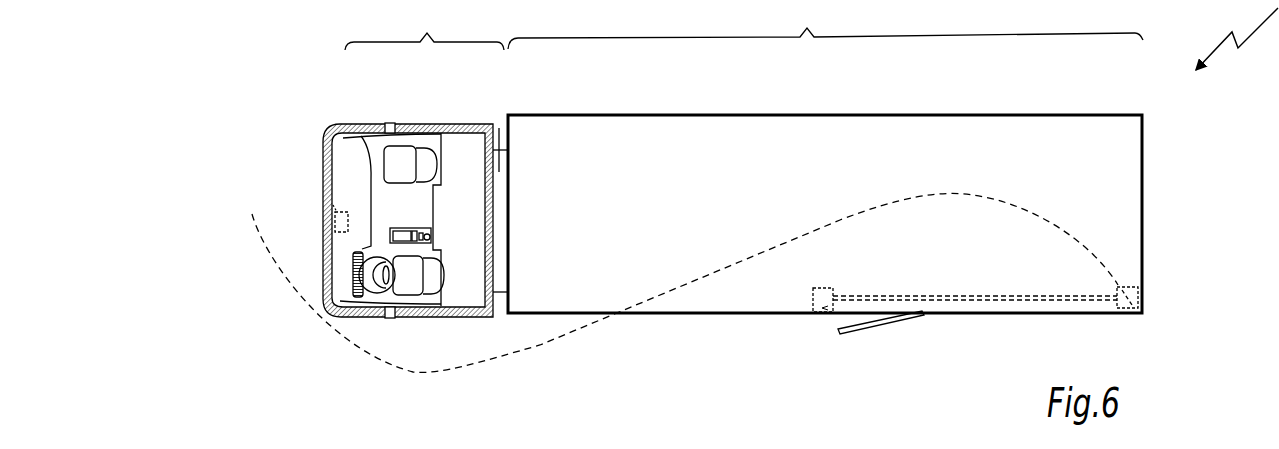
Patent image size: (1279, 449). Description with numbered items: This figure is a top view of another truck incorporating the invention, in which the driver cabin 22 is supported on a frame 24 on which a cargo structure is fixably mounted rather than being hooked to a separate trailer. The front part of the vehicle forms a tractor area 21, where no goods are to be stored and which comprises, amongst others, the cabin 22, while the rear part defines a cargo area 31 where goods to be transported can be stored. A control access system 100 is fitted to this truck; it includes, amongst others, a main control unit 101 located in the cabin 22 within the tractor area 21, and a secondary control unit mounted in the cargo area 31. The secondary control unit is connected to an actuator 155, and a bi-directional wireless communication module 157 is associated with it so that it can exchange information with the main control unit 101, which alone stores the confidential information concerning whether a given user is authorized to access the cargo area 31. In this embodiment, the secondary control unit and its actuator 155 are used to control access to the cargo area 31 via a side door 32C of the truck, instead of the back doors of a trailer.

The tractor area 21 is at (424, 28).
The driver cabin 22 is at (327, 148).
The frame 24 is at (500, 128).
The cargo area 31 is at (1230, 153).
The side door 32C is at (866, 331).
The vehicle system 100 is at (214, 170).
The main control unit 101 is at (335, 211).
The actuator 155 is at (813, 318).
The second module 157 is at (666, 282).